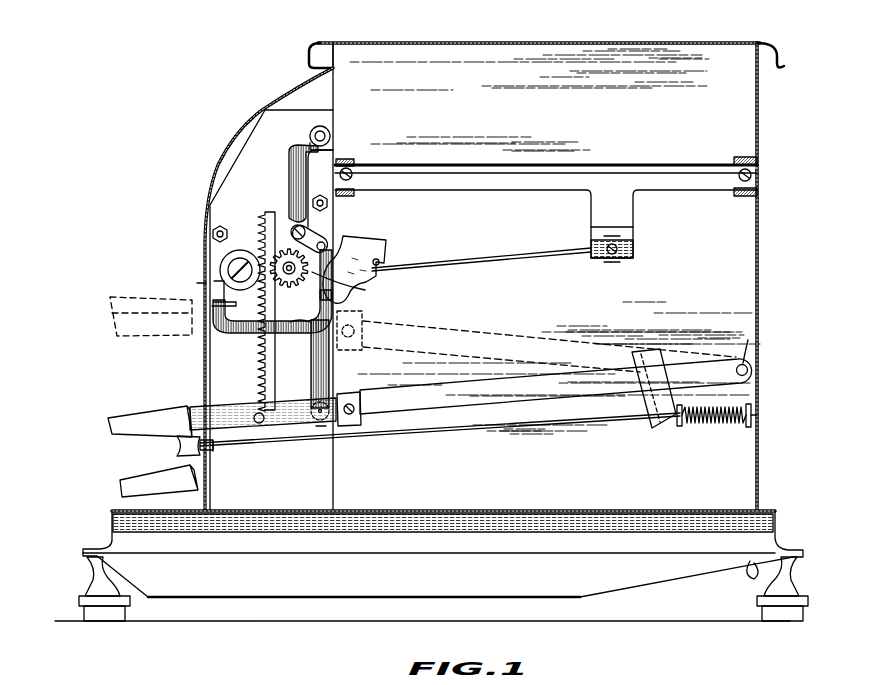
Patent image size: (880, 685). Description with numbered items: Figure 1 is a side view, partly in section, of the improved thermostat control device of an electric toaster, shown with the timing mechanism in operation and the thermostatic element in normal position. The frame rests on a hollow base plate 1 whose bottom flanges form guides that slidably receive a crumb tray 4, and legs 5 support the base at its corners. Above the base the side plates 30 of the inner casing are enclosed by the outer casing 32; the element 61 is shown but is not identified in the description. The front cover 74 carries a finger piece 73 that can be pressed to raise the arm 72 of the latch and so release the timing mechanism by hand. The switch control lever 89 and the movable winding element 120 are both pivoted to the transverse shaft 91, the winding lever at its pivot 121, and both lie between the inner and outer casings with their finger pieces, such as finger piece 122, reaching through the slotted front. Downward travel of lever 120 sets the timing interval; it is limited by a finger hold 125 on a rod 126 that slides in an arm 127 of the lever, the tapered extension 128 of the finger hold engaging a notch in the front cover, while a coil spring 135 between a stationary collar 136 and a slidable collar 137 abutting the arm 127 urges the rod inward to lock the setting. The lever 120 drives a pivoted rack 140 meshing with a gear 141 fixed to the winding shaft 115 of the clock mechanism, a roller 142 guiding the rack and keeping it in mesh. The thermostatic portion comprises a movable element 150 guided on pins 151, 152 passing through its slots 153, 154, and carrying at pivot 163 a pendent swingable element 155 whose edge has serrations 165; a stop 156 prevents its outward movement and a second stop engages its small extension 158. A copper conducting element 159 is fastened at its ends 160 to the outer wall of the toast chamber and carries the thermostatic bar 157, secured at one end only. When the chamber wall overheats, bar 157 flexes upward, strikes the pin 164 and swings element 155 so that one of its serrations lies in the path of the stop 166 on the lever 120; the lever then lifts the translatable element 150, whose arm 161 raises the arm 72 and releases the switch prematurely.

The base plate 1 is at (505, 525).
The crumb tray 4 is at (366, 600).
The legs 5 is at (95, 578).
The side plates of inner casing 30 is at (660, 58).
The outer casing 32 is at (762, 110).
The frame plate 61 is at (556, 46).
The arm 72 is at (214, 300).
The finger piece 73 is at (198, 283).
The front cover 74 is at (247, 118).
The switch control lever 89 is at (128, 486).
The shaft 91 is at (738, 341).
The winding shaft 115 is at (365, 290).
The movable winding element 120 is at (455, 376).
The pivot 121 is at (750, 371).
The finger piece 122 is at (125, 313).
The finger hold 125 is at (175, 446).
The rod 126 is at (484, 437).
The arm 127 is at (657, 432).
The tapered extension 128 is at (214, 450).
The coil spring 135 is at (722, 424).
The stationary collar 136 is at (752, 404).
The slidable collar 137 is at (681, 426).
The pivoted rack 140 is at (258, 381).
The gear 141 is at (282, 252).
The roller 142 is at (228, 262).
The movable element 150 is at (292, 163).
The pin 151 is at (331, 130).
The pin 152 is at (321, 421).
The slot 153 is at (316, 146).
The slot 154 is at (313, 428).
The swingable element 155 is at (372, 246).
The stop 156 is at (326, 286).
The thermostatic bar 157 is at (508, 262).
The small extension 158 is at (610, 262).
The conducting element 159 is at (612, 180).
The end connections 160 is at (350, 170).
The arm 161 is at (205, 333).
The pivot 163 is at (326, 242).
The pin 164 is at (380, 262).
The serrations 165 is at (298, 326).
The stop 166 is at (357, 395).